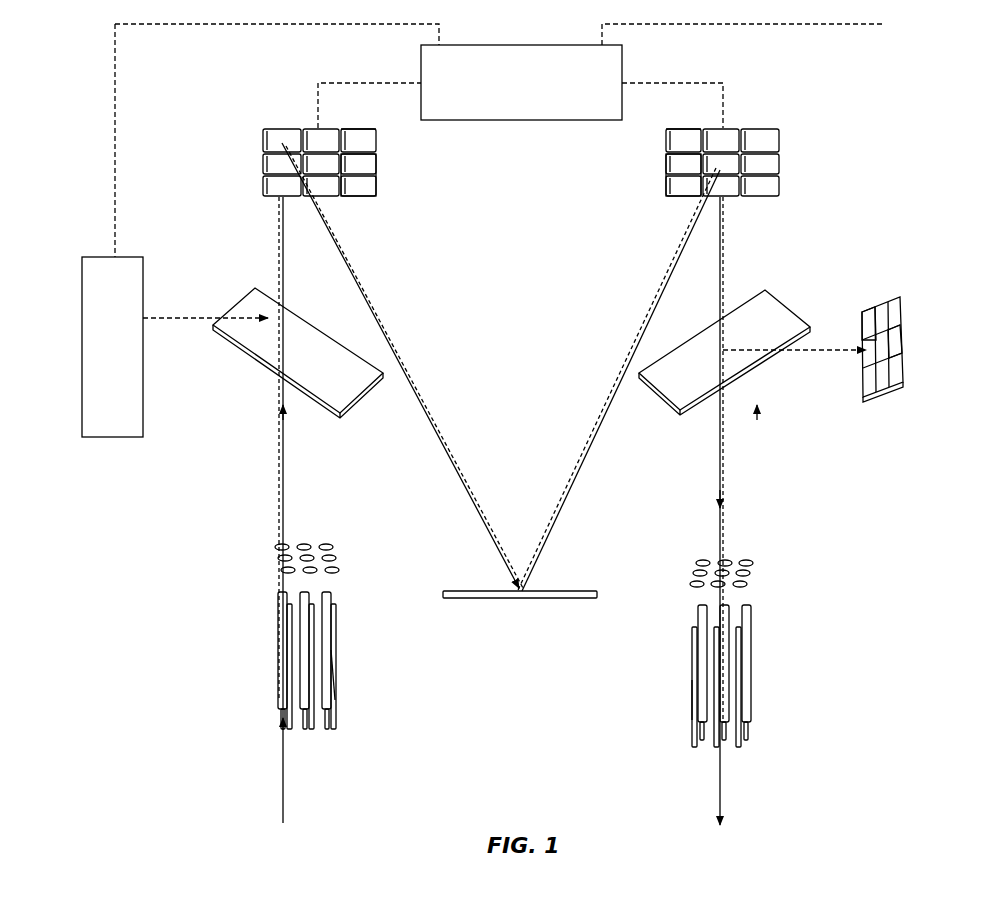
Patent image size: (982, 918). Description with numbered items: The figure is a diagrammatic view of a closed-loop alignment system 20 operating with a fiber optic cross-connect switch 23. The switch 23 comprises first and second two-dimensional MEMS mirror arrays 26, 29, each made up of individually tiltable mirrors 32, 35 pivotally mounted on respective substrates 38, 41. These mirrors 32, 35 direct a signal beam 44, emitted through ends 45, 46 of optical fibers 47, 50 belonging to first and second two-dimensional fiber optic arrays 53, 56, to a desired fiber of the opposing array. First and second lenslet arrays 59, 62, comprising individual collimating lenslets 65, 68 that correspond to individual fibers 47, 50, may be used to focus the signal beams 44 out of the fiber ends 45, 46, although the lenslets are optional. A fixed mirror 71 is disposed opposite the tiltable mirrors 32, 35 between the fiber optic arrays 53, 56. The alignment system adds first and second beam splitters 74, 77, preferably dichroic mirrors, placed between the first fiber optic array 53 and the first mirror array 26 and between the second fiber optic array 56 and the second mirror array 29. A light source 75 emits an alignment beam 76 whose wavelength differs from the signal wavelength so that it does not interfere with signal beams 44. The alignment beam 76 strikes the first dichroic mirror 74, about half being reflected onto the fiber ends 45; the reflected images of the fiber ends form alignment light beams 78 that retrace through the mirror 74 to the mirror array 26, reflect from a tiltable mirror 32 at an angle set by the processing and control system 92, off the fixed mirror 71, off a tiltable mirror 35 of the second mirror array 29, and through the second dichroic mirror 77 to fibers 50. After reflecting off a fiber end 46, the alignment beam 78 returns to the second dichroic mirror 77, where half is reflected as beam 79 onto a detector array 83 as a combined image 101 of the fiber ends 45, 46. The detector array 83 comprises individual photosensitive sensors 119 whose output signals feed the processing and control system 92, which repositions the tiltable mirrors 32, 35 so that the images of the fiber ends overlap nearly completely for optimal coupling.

The closed-loop alignment system 20 is at (818, 232).
The fiber optic cross-connect switch 23 is at (522, 243).
The first two-dimensional MEMS mirror array 26 is at (278, 124).
The second two-dimensional MEMS mirror array 29 is at (733, 123).
The tiltable mirrors 32 is at (355, 163).
The tiltable mirrors 35 is at (692, 165).
The substrate 38 is at (366, 128).
The substrate 41 is at (685, 128).
The signal beam 44 is at (372, 310).
The fiber ends 45 is at (282, 592).
The fiber ends 46 is at (702, 605).
The optical fibers 47 is at (333, 660).
The optical fibers 50 is at (693, 685).
The first two-dimensional fiber optic array 53 is at (298, 648).
The second two-dimensional fiber optic array 56 is at (688, 662).
The first lenslet array 59 is at (304, 552).
The second lenslet array 62 is at (716, 568).
The collimating lenslets 65 is at (333, 547).
The collimating lenslets 68 is at (753, 563).
The fixed mirror 71 is at (490, 600).
The first beam splitter 74 is at (313, 332).
The light source 75 is at (106, 257).
The alignment beam 76 is at (206, 318).
The second beam splitter 77 is at (673, 410).
The alignment light beams 78 is at (277, 228).
The beam 79 is at (845, 352).
The detector array 83 is at (901, 295).
The processing and control system 92 is at (533, 45).
The combined image 101 is at (878, 350).
The photosensitive sensors 119 is at (895, 343).